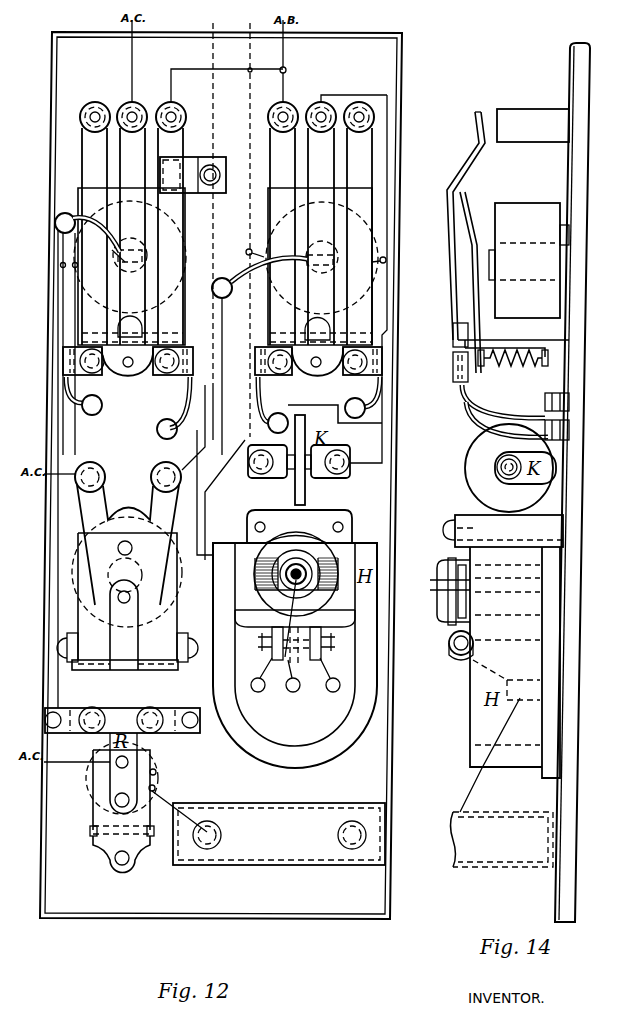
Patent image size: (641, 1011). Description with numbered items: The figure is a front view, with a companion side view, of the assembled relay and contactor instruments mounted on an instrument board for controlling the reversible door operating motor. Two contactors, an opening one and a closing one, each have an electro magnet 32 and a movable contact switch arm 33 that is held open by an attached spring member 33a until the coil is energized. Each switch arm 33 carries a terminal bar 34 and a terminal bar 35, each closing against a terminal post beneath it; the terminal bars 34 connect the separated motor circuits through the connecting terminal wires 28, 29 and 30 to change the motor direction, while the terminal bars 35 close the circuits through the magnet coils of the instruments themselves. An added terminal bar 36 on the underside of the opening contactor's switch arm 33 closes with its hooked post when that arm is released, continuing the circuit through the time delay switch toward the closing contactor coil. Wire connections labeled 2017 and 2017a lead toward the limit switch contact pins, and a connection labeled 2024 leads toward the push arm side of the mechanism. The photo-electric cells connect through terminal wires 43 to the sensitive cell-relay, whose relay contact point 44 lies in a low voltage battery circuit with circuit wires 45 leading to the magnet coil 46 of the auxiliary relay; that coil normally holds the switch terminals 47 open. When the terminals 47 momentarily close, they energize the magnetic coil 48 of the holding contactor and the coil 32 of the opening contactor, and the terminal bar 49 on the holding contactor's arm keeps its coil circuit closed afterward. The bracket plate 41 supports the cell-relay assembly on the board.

In FIG. 12, the terminal wire 30 is at (95, 20).
In FIG. 12, the terminal bar 34 is at (82, 165).
In FIG. 14, the terminal bar 34 is at (462, 166).
In FIG. 12, the terminal bar 35 is at (123, 147).
In FIG. 12, the added terminal bar 36 is at (183, 147).
In FIG. 12, the movable contact switch arm 33 is at (75, 315).
In FIG. 14, the movable contact switch arm 33 is at (458, 200).
In FIG. 12, the electro magnet 32 is at (75, 262).
In FIG. 14, the electro magnet 32 is at (510, 203).
In FIG. 12, the lever to 17 2017 is at (62, 242).
In FIG. 12, the wire to 17a 2017a is at (242, 225).
In FIG. 12, the wire to 24 2024 is at (80, 404).
In FIG. 12, the terminal wire 28 is at (157, 428).
In FIG. 12, the terminal wire 29 is at (382, 423).
In FIG. 12, the bracket plate 41 is at (288, 560).
In FIG. 12, the terminal wires 43 is at (300, 560).
In FIG. 12, the relay contact point 44 is at (320, 630).
In FIG. 14, the relay contact point 44 is at (460, 607).
In FIG. 12, the circuit wires 45 is at (252, 690).
In FIG. 12, the magnet coil 46 is at (293, 692).
In FIG. 12, the switch terminals 47 is at (110, 783).
In FIG. 12, the magnetic coil 48 is at (68, 580).
In FIG. 12, the terminal bar 49 is at (78, 503).
In FIG. 14, the spring member 33a is at (500, 370).